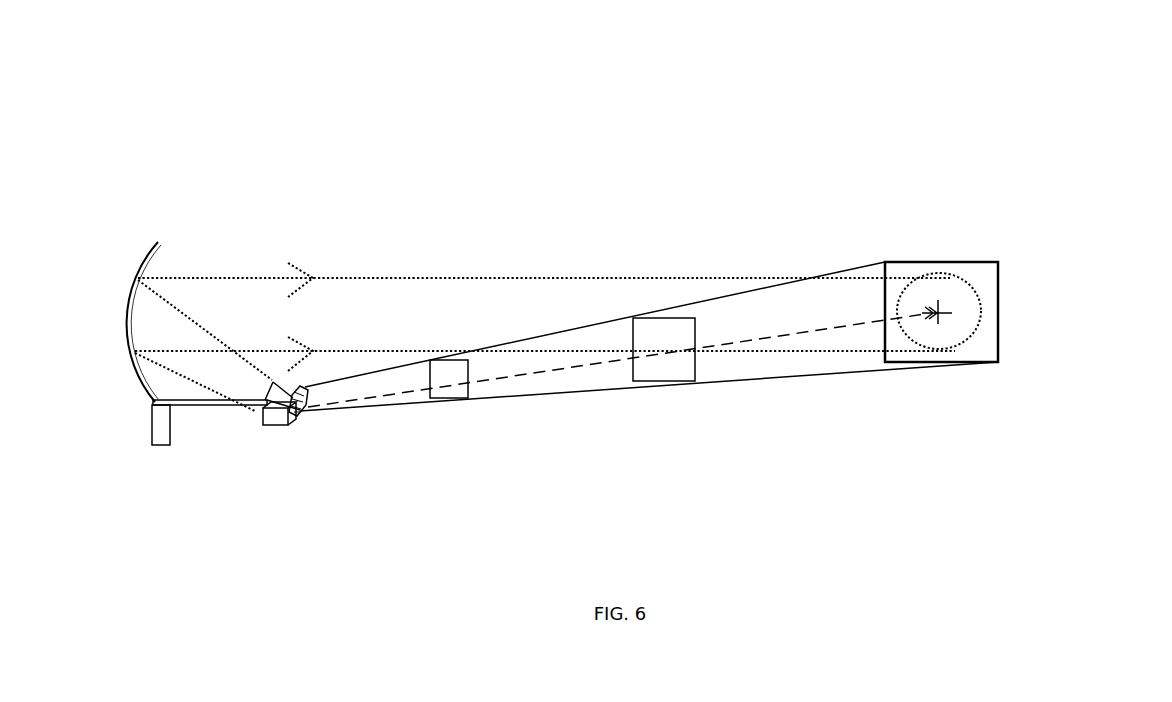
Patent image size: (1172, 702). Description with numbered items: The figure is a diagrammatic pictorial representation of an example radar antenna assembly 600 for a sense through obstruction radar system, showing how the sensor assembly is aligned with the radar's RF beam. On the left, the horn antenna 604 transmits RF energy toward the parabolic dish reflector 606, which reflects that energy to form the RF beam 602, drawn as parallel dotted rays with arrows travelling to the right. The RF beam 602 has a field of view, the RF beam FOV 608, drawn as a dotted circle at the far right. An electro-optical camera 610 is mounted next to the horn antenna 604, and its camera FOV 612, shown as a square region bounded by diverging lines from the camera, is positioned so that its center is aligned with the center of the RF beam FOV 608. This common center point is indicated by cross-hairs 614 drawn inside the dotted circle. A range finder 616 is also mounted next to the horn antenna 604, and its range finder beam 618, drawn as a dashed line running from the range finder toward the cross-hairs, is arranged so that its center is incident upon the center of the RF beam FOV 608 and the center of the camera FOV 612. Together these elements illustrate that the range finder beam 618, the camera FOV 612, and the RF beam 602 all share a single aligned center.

The radar antenna assembly 600 is at (612, 118).
The RF beam 602 is at (515, 277).
The horn antenna 604 is at (305, 402).
The parabolic dish reflector 606 is at (122, 338).
The RF beam field of view 608 is at (930, 275).
The electro-optical camera 610 is at (320, 403).
The camera field of view 612 is at (940, 365).
The cross-hairs 614 is at (947, 305).
The range finder 616 is at (277, 425).
The range finder beam 618 is at (775, 338).